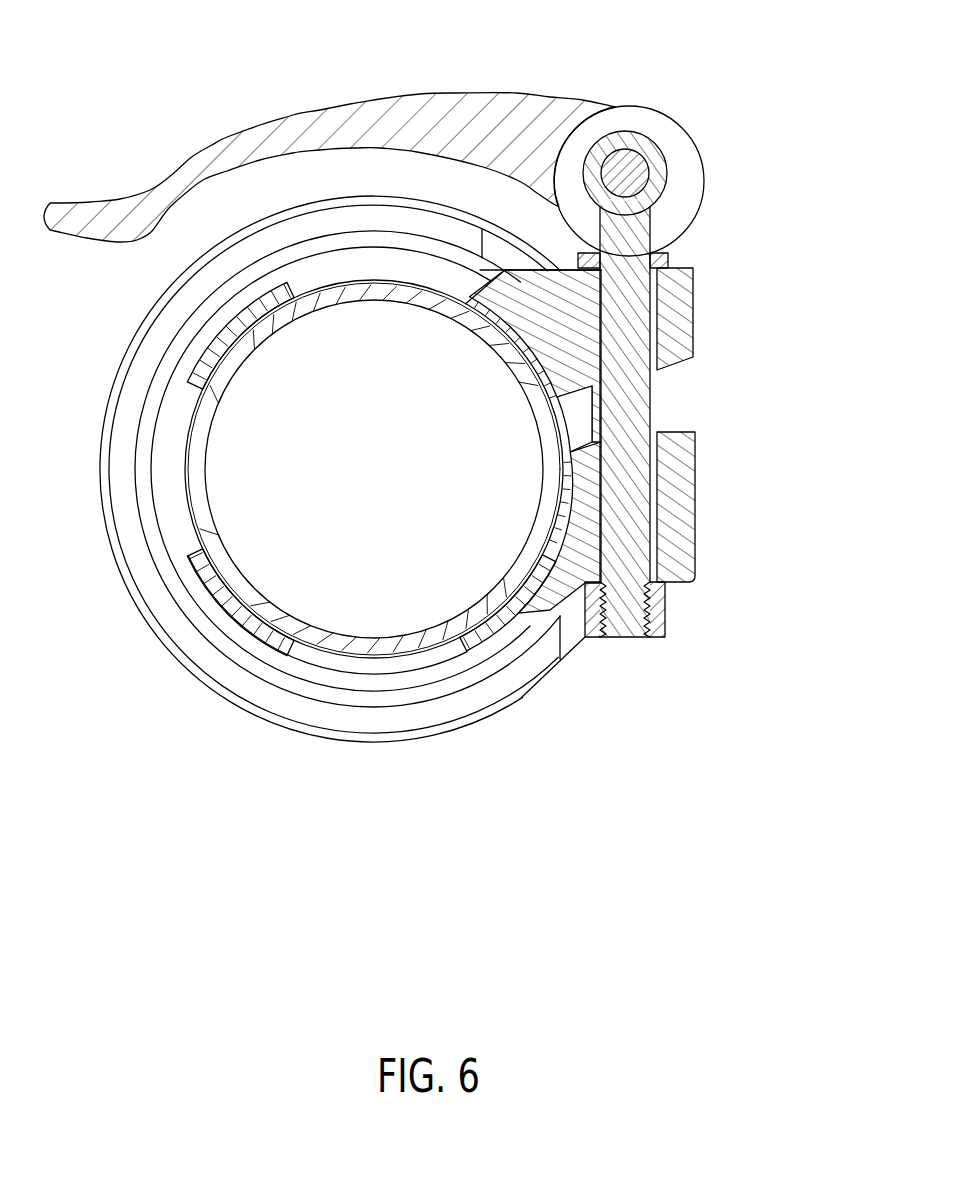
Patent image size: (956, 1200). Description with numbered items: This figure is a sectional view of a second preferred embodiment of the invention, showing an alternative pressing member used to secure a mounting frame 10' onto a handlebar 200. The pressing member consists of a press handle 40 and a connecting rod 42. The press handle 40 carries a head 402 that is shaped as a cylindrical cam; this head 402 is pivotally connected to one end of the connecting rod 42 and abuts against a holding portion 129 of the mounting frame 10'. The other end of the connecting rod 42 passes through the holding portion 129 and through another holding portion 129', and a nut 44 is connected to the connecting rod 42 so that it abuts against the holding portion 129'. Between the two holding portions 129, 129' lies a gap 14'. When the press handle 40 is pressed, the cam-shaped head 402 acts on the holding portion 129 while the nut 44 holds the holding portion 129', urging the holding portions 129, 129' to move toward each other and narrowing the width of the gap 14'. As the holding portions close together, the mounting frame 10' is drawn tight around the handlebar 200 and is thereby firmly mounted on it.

The press handle 40 is at (552, 135).
The head 402 is at (692, 183).
The holding portion 129 is at (726, 319).
The gap 14' is at (687, 408).
The connecting rod 42 is at (633, 420).
The holding portion 129' is at (743, 507).
The nut 44 is at (660, 602).
The handlebar 200 is at (383, 643).
The mounting frame 10' is at (375, 513).